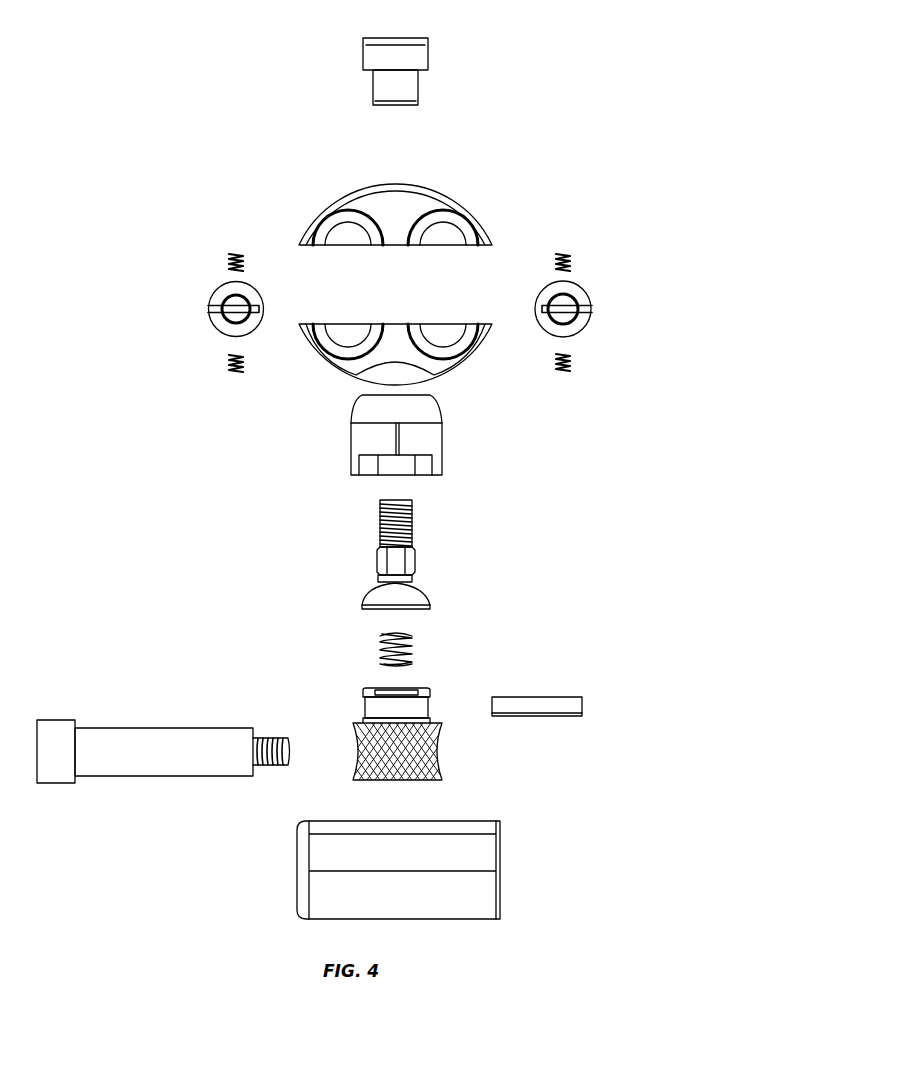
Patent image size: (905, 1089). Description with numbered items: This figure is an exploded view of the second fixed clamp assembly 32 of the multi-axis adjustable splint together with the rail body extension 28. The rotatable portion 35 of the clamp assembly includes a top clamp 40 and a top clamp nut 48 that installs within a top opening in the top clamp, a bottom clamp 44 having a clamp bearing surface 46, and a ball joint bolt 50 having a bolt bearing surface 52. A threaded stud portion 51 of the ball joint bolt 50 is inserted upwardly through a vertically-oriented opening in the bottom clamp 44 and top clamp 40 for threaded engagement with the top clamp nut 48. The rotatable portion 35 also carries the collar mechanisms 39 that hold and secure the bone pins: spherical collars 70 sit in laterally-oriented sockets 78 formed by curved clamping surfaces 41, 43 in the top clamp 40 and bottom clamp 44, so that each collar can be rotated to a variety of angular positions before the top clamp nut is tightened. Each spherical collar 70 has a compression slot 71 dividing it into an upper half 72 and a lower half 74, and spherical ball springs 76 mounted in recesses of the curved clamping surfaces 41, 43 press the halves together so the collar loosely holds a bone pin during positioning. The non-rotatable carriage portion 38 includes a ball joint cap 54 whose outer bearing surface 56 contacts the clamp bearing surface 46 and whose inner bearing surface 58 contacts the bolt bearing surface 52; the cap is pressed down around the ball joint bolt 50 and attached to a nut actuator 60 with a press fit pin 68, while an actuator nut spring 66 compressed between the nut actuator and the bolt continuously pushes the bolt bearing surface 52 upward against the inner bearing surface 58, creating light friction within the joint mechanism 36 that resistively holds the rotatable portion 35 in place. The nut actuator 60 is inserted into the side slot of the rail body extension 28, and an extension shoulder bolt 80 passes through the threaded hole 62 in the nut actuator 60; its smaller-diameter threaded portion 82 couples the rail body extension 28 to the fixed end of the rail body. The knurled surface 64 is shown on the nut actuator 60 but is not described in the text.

The rail body extension 28 is at (297, 861).
The second fixed clamp assembly 32 is at (248, 70).
The rotatable portion 35 is at (550, 222).
The joint mechanism 36 is at (503, 590).
The carriage portion 38 is at (510, 655).
The collar mechanism 39 is at (193, 362).
The top clamp 40 is at (455, 190).
The curved clamping surface 41 is at (432, 232).
The curved clamping surface 43 is at (466, 342).
The bottom clamp 44 is at (482, 344).
The clamp bearing surface 46 is at (360, 378).
The top clamp nut 48 is at (363, 56).
The ball joint bolt 50 is at (414, 562).
The threaded stud portion 51 is at (380, 521).
The bolt bearing surface 52 is at (360, 591).
The ball joint cap 54 is at (350, 441).
The outer bearing surface 56 is at (446, 400).
The inner bearing surface 58 is at (401, 462).
The nut actuator 60 is at (429, 705).
The threaded hole 62 is at (352, 757).
The knurled surface 64 is at (437, 752).
The actuator nut spring 66 is at (380, 653).
The press fit pin 68 is at (534, 717).
The spherical collar 70 is at (211, 318).
The compression slot 71 is at (585, 300).
The upper half 72 is at (580, 302).
The lower half 74 is at (585, 332).
The spherical ball spring 76 is at (230, 263).
The socket 78 is at (340, 296).
The extension shoulder bolt 80 is at (218, 728).
The smaller-diameter threaded portion 82 is at (264, 738).